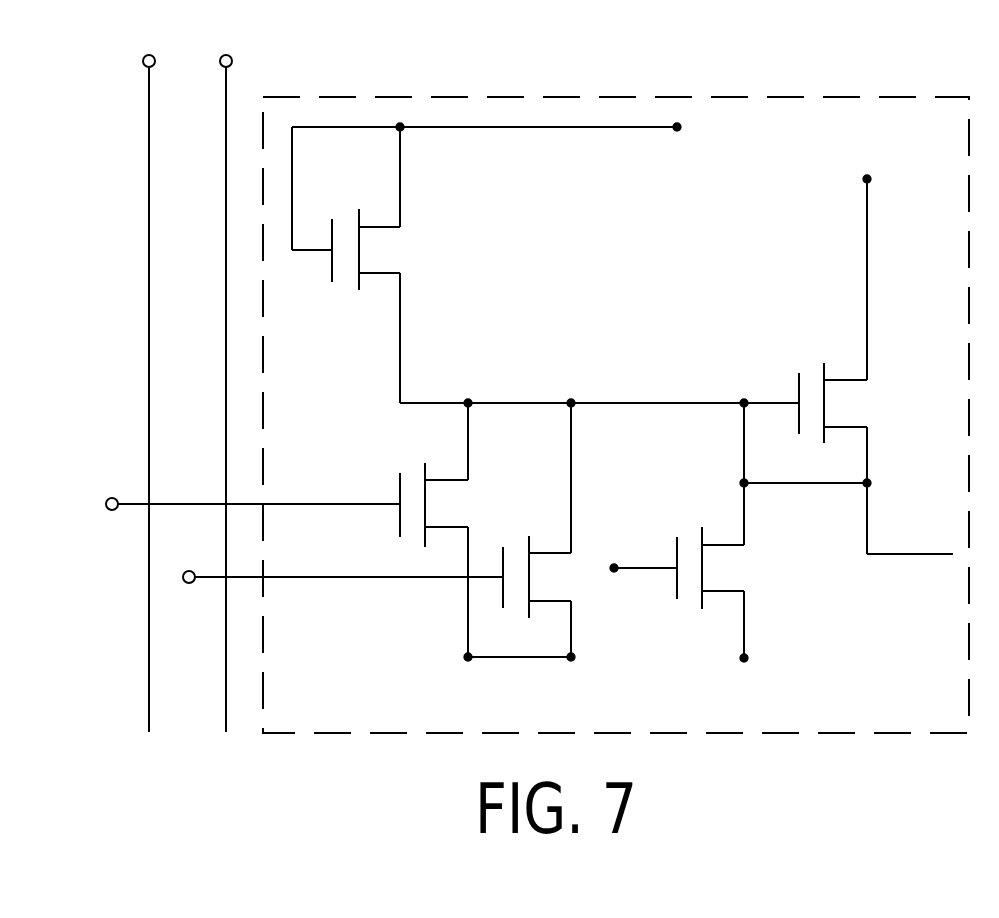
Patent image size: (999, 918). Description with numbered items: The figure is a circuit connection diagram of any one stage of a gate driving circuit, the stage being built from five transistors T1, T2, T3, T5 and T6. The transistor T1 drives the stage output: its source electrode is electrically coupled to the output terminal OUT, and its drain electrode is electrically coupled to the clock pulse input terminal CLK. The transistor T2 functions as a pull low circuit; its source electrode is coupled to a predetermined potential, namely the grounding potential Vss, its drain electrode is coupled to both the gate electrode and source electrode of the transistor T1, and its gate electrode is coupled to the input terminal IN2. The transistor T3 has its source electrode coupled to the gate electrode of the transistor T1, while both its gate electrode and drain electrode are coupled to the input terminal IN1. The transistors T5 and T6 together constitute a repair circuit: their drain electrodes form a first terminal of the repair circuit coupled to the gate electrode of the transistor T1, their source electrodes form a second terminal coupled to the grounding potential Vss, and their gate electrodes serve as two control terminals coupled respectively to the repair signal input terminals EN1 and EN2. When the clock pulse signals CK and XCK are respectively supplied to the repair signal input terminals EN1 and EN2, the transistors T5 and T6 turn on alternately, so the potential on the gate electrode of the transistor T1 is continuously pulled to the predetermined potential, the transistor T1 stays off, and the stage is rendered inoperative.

The transistor T1 is at (810, 458).
The transistor T2 is at (717, 592).
The transistor T3 is at (353, 265).
The transistor T5 is at (441, 530).
The transistor T6 is at (545, 530).
The clock pulse signal CK is at (148, 371).
The clock pulse signal XCK is at (227, 371).
The clock pulse input terminal CLK is at (869, 257).
The input terminal IN1 is at (509, 131).
The input terminal IN2 is at (643, 547).
The repair signal input terminal EN1 is at (253, 485).
The repair signal input terminal EN2 is at (343, 557).
The output terminal OUT is at (910, 574).
The grounding potential Vss is at (615, 676).